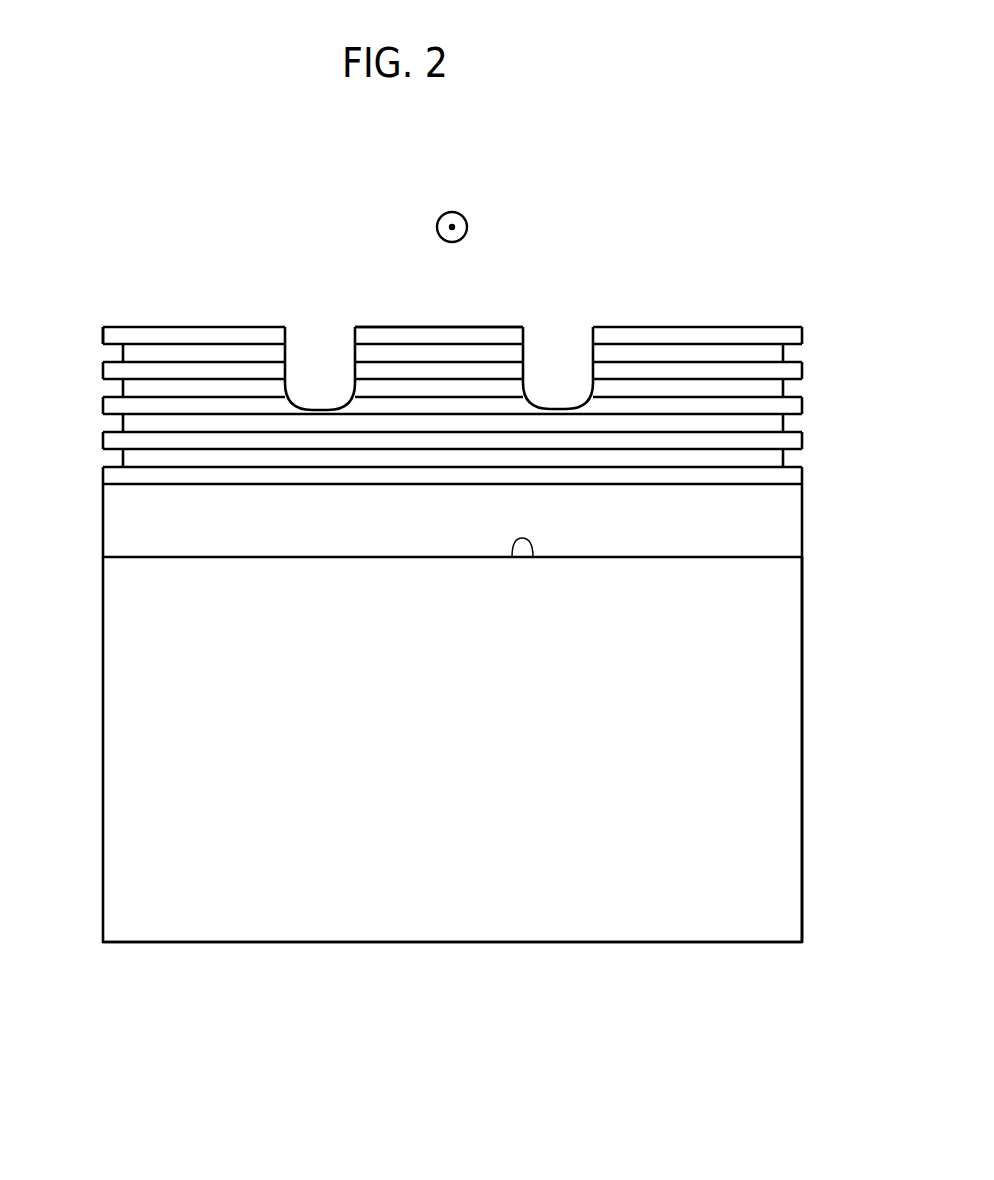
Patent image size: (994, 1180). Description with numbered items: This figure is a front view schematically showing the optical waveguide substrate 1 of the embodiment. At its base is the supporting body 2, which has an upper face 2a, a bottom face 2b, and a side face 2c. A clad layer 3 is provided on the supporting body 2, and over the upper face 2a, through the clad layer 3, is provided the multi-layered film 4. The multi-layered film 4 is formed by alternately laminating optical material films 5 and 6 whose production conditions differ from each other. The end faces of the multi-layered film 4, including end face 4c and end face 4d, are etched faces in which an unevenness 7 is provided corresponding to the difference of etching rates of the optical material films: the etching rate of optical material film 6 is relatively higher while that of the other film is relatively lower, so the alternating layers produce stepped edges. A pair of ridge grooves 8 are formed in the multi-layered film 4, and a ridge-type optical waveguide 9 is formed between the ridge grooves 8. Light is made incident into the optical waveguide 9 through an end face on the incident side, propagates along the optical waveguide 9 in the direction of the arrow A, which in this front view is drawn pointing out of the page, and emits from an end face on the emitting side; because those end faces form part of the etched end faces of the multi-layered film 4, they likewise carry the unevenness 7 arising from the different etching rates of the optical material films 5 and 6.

The optical waveguide substrate 1 is at (782, 288).
The supporting body 2 is at (777, 728).
The upper face 2a is at (533, 557).
The bottom face 2b is at (727, 943).
The side face 2c is at (803, 837).
The clad layer 3 is at (777, 538).
The multi-layered film 4 is at (870, 328).
The end face 4c is at (802, 336).
The end face 4d is at (103, 333).
The optical material film 5 is at (793, 442).
The optical material film 6 is at (777, 388).
The unevenness 7 is at (788, 351).
The ridge grooves 8 is at (287, 357).
The ridge-type optical waveguide 9 is at (467, 337).
The arrow A is at (463, 214).